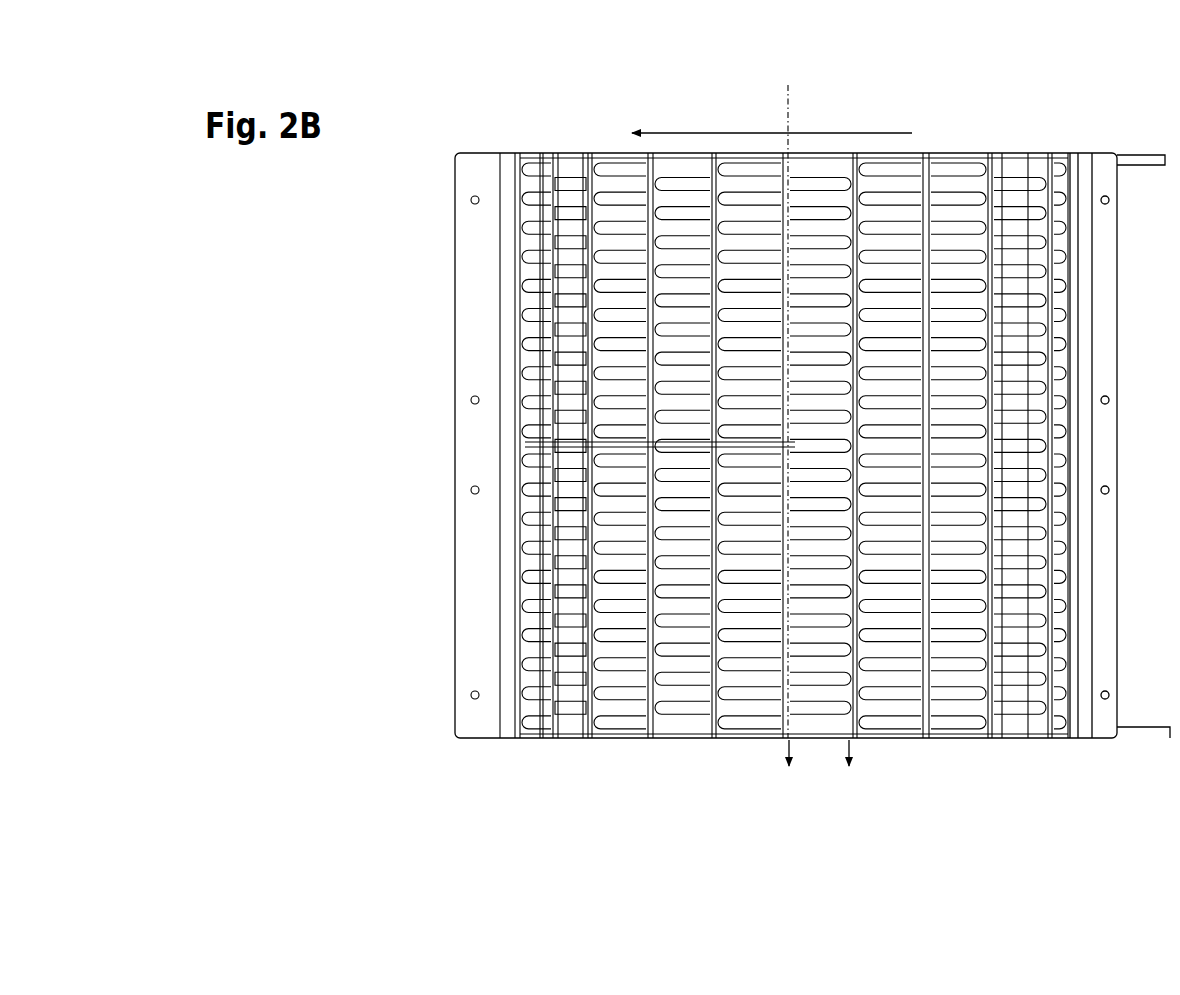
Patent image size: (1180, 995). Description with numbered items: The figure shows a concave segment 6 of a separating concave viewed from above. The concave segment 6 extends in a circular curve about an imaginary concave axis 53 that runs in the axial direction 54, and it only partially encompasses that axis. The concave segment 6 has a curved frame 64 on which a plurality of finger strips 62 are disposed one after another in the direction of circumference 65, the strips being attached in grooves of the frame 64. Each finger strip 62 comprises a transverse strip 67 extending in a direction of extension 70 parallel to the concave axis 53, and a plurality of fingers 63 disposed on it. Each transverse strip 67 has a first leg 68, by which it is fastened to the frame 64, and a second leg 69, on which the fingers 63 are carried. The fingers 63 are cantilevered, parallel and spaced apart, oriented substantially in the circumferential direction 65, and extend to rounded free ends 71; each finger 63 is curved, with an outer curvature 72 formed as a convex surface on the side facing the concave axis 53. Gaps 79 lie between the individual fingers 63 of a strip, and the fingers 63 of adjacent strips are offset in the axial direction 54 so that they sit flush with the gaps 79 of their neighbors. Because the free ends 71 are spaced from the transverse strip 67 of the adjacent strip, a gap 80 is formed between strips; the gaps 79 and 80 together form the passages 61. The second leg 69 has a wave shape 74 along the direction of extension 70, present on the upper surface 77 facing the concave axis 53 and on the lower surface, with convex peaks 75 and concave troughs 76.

The concave segment 6 is at (420, 112).
The concave axis 53 is at (790, 113).
The axial direction 54 is at (804, 800).
The passages 61 is at (1035, 403).
The finger strips 62 is at (677, 705).
The fingers 63 is at (903, 718).
The frame 64 is at (1096, 718).
The direction of circumference 65 is at (626, 148).
The transverse strip 67 is at (556, 485).
The first leg 68 is at (565, 718).
The second leg 69 is at (706, 718).
The direction of extension 70 is at (864, 800).
The free ends 71 is at (733, 175).
The outer curvature 72 is at (878, 172).
The wave shape 74 is at (560, 245).
The peaks 75 is at (540, 633).
The troughs 76 is at (540, 650).
The upper surface 77 is at (920, 165).
The gaps 79 is at (950, 200).
The gap 80 is at (648, 215).